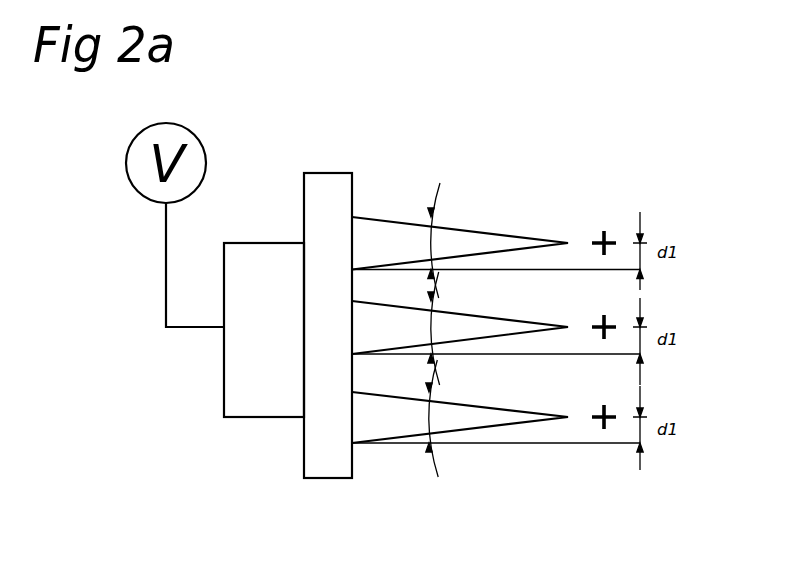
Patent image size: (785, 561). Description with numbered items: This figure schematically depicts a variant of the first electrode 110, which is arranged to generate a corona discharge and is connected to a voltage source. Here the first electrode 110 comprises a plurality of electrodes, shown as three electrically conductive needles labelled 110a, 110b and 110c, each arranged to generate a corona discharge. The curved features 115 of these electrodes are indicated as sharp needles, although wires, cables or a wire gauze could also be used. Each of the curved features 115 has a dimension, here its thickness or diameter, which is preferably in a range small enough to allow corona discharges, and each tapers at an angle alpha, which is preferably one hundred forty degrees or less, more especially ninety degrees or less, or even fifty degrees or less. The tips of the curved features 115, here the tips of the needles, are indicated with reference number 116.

The first electrode 110 is at (496, 326).
The electrode 110a is at (535, 233).
The electrode 110b is at (528, 315).
The electrode 110c is at (530, 401).
The curved features 115 is at (456, 214).
The tips of the curved features 116 is at (568, 243).